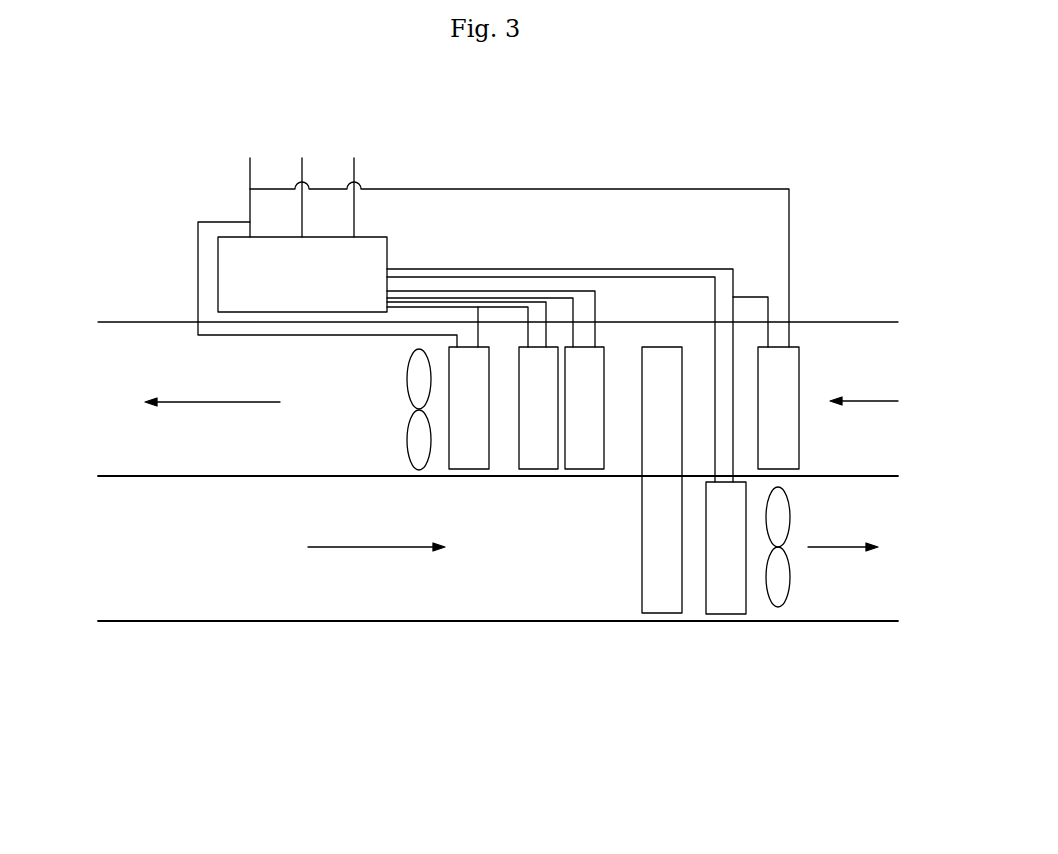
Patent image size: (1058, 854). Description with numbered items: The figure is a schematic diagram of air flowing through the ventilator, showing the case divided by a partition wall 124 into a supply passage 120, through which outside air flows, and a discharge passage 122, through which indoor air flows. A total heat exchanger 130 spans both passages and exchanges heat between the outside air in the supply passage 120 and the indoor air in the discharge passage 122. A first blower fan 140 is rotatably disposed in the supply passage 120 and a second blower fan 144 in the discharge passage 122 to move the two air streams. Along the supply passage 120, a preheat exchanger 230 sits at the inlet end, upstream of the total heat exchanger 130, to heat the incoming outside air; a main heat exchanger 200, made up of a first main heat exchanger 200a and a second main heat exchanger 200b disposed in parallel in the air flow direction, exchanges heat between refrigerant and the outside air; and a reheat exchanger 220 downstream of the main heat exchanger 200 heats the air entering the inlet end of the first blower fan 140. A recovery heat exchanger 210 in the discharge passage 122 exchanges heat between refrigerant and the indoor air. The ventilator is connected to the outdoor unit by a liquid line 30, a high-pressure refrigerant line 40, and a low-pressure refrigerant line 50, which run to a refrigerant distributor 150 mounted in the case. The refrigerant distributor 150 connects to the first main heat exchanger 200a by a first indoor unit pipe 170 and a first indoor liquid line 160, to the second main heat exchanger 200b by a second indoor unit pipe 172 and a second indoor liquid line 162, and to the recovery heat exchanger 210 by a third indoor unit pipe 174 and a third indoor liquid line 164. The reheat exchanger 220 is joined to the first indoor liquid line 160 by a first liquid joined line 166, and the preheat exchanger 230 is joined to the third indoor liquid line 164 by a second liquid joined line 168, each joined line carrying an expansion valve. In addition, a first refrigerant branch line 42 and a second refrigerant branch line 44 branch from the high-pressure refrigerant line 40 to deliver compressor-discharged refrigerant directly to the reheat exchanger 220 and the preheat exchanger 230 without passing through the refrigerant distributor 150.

The supply passage 120 is at (862, 357).
The discharge passage 122 is at (556, 555).
The partition wall 124 is at (117, 478).
The total heat exchanger 130 is at (663, 597).
The first blower fan 140 is at (418, 442).
The second blower fan 144 is at (780, 590).
The refrigerant distributor 150 is at (367, 263).
The first indoor liquid line 160 is at (508, 307).
The second indoor liquid line 162 is at (437, 297).
The third indoor liquid line 164 is at (737, 276).
The first liquid joined line 166 is at (478, 330).
The second liquid joined line 168 is at (763, 296).
The first indoor unit pipe 170 is at (542, 302).
The second indoor unit pipe 172 is at (468, 291).
The third indoor unit pipe 174 is at (735, 268).
The main heat exchanger 200 is at (630, 277).
The first main heat exchanger 200a is at (536, 380).
The second main heat exchanger 200b is at (589, 383).
The recovery heat exchanger 210 is at (727, 597).
The reheat exchanger 220 is at (475, 455).
The preheat exchanger 230 is at (783, 366).
The liquid line 30 is at (300, 170).
The high-pressure refrigerant line 40 is at (249, 160).
The first refrigerant branch line 42 is at (198, 276).
The second refrigerant branch line 44 is at (270, 187).
The low-pressure refrigerant line 50 is at (353, 170).